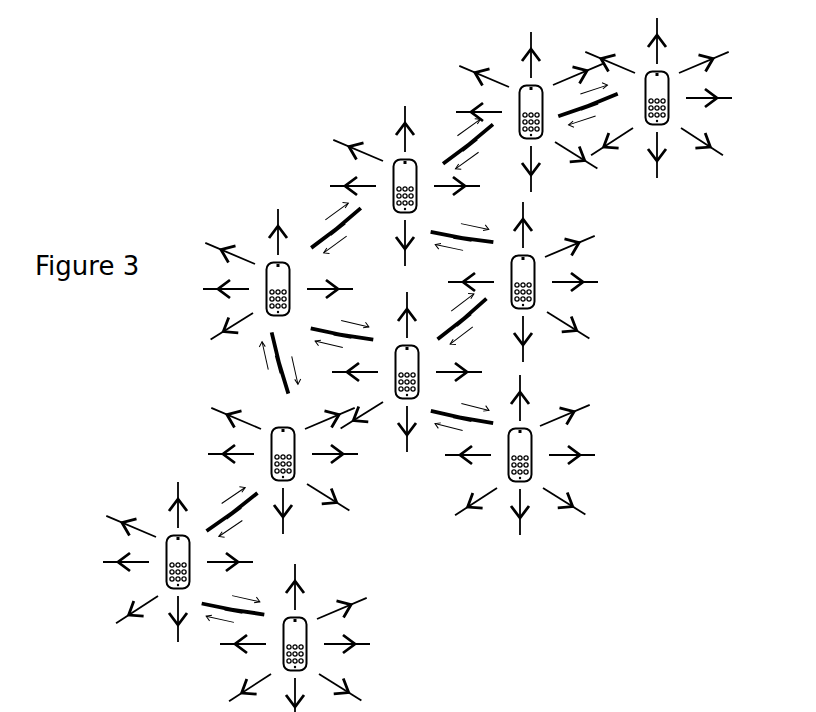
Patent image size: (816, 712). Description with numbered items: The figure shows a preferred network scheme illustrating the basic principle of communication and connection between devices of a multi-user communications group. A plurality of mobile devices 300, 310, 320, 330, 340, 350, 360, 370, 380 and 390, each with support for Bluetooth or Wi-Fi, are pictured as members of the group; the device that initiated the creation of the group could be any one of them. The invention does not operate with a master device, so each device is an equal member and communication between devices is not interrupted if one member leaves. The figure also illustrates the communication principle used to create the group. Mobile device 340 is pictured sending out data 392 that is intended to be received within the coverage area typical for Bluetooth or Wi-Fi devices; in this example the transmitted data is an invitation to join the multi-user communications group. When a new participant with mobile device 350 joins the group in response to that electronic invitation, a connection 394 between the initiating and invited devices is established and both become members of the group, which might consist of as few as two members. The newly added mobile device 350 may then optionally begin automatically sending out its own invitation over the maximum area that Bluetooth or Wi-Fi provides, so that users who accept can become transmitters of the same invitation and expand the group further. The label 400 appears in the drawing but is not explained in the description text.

The mobile device node 300 is at (668, 86).
The mobile device node 310 is at (537, 268).
The mobile device node 320 is at (534, 439).
The mobile device node 330 is at (308, 632).
The mobile device node 340 is at (167, 551).
The mobile device node 350 is at (270, 440).
The mobile device node 360 is at (265, 283).
The mobile device node 370 is at (392, 178).
The mobile device node 380 is at (518, 107).
The mobile device node 390 is at (420, 362).
The broadcast signal 392 is at (123, 517).
The wireless link 394 is at (222, 490).
The ad hoc network 400 is at (745, 711).